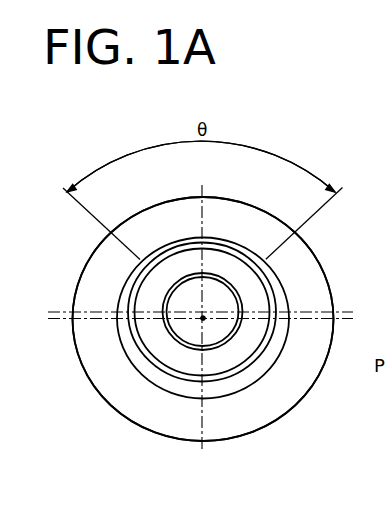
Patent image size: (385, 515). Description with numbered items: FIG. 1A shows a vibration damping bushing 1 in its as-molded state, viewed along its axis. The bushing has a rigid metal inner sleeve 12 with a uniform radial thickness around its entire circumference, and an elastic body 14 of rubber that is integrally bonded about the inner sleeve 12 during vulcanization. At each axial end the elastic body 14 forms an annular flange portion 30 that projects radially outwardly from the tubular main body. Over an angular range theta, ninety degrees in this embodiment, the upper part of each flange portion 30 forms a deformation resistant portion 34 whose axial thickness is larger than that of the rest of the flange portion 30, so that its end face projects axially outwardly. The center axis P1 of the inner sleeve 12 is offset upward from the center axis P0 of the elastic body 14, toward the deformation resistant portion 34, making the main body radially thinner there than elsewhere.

The bearing device 1 is at (283, 148).
The inner sleeve 12 is at (240, 365).
The elastic body 14 is at (265, 425).
The flange portion 30 is at (120, 398).
The deformation resistant portion 34 is at (168, 215).
The center axis of elastic body P0 is at (203, 318).
The center axis of inner sleeve P1 is at (202, 312).